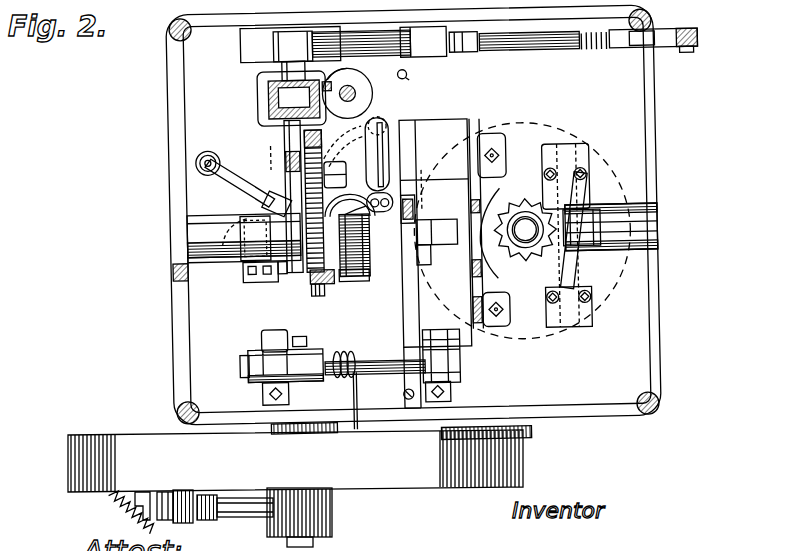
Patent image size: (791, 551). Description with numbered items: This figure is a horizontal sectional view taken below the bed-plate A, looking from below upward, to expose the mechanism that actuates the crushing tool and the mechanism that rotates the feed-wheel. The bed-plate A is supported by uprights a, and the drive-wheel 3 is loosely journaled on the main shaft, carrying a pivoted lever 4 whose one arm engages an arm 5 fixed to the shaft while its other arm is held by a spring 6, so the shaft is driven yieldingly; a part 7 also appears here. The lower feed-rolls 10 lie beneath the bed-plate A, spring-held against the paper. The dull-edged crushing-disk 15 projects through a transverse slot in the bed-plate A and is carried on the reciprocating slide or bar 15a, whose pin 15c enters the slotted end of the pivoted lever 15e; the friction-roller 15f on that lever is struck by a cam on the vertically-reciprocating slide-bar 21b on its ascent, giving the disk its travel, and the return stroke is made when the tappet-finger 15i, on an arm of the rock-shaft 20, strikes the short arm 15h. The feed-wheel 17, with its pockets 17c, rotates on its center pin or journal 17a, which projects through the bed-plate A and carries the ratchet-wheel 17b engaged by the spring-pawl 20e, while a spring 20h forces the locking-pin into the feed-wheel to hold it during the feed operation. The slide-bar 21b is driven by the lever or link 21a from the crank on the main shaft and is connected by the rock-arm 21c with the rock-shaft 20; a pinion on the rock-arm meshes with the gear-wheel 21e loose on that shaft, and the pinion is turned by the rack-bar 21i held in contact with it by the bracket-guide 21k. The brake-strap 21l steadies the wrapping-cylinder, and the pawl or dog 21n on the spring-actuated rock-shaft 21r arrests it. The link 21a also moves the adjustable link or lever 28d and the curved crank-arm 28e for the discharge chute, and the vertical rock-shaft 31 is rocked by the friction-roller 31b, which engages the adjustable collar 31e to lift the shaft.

The bed-plate A is at (414, 225).
The uprights a is at (196, 35).
The drive-wheel 3 is at (295, 461).
The lever 4 is at (186, 492).
The arm 5 is at (253, 518).
The spring 6 is at (117, 504).
The collar 7 is at (144, 492).
The lower feed-rolls 10 is at (360, 230).
The crushing-disk 15 is at (410, 296).
The reciprocating slide or bar 15a is at (407, 209).
The pin 15c is at (395, 176).
The pivoted lever 15e is at (347, 161).
The friction-roller 15f is at (289, 268).
The short arm 15h is at (240, 228).
The tappet-finger 15i is at (254, 271).
The feed-wheel 17 is at (452, 237).
The center pin or journal 17a is at (538, 242).
The ratchet-wheel 17b is at (522, 231).
The pockets 17c is at (438, 245).
The rock-shaft 20 is at (265, 239).
The spring-pawl 20e is at (566, 280).
The spring 20h is at (586, 199).
The lever or link 21a is at (369, 44).
The vertically-reciprocating slide-bar 21b is at (272, 100).
The rock-arm 21c is at (282, 130).
The gear-wheel 21e is at (330, 283).
The rack-bar 21i is at (284, 120).
The bracket-guide 21k is at (300, 99).
The brake-strap 21l is at (295, 155).
The pawl or dog 21n is at (455, 358).
The spring-actuated rock-shaft 21r is at (362, 372).
The adjustable link or lever 28d is at (528, 54).
The curved crank-arm 28e is at (706, 48).
The rock-shaft 31 is at (358, 93).
The friction-roller 31b is at (341, 75).
The collar 31e is at (410, 75).